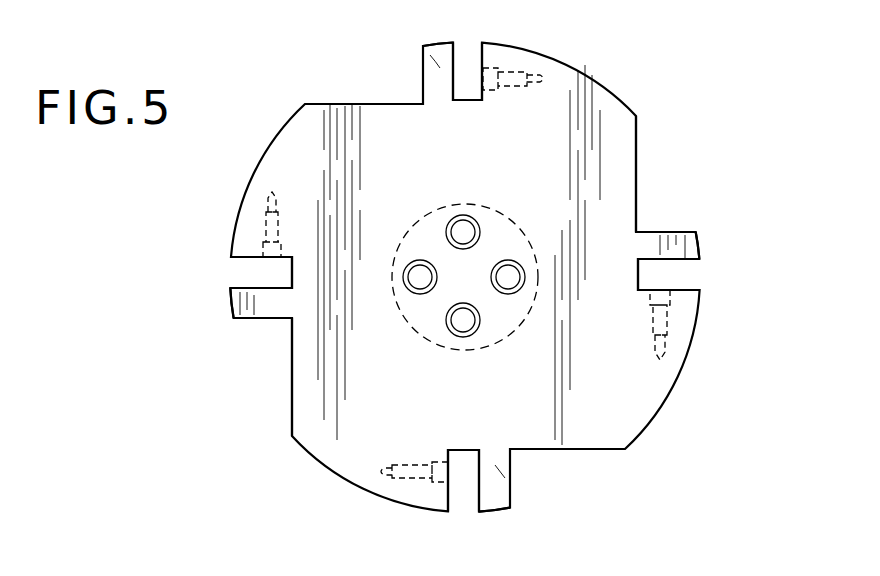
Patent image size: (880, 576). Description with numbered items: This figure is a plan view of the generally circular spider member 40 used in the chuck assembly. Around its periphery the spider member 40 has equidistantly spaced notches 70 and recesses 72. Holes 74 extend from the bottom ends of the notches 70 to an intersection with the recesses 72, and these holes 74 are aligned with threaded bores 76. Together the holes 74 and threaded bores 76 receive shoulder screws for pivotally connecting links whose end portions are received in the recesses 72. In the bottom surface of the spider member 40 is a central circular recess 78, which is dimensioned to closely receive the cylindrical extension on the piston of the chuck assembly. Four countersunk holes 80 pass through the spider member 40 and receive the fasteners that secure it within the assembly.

The spider member 40 is at (250, 168).
The notches 70 is at (388, 100).
The recesses 72 is at (458, 57).
The holes 74 is at (420, 48).
The threaded bores 76 is at (513, 72).
The central circular recess 78 is at (412, 330).
The countersunk holes 80 is at (470, 217).